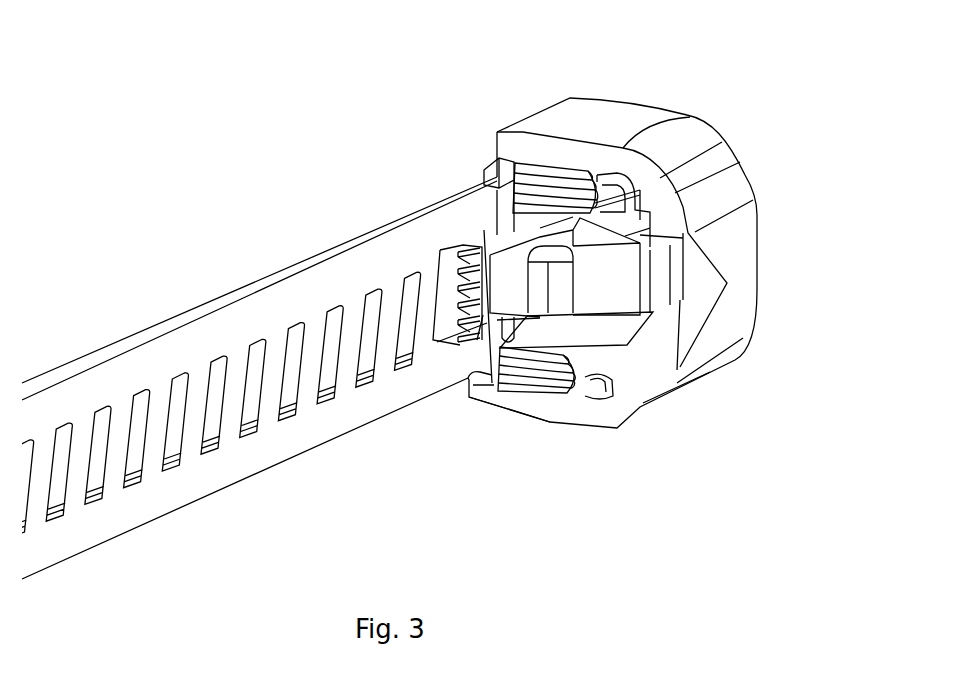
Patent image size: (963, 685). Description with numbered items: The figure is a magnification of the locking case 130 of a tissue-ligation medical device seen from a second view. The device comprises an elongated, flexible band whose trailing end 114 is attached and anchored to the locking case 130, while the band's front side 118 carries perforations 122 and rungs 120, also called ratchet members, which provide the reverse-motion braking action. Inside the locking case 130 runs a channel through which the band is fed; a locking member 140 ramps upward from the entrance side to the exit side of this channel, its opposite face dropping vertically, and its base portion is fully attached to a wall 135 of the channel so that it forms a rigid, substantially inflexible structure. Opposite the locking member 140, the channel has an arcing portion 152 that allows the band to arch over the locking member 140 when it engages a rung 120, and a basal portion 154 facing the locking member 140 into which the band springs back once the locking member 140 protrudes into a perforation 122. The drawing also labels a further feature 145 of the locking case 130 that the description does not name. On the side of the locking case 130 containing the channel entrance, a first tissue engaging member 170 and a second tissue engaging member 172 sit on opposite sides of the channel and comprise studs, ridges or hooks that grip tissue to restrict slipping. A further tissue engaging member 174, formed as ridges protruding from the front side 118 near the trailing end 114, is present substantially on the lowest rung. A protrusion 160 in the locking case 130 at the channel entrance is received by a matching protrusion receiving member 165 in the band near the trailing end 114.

The trailing end 114 is at (478, 348).
The front side 118 is at (197, 470).
The rungs 120 is at (113, 467).
The perforations 122 is at (250, 410).
The locking case 130 is at (733, 188).
The wall 135 is at (538, 220).
The locking member 140 is at (640, 268).
The spring retainer 145 is at (575, 227).
The arcing portion 152 is at (653, 312).
The basal portion 154 is at (600, 380).
The protrusion 160 is at (523, 298).
The protrusion receiving member 165 is at (483, 248).
The first tissue engaging member 170 is at (528, 172).
The second tissue engaging member 172 is at (537, 377).
The tissue engaging member 174 is at (463, 292).